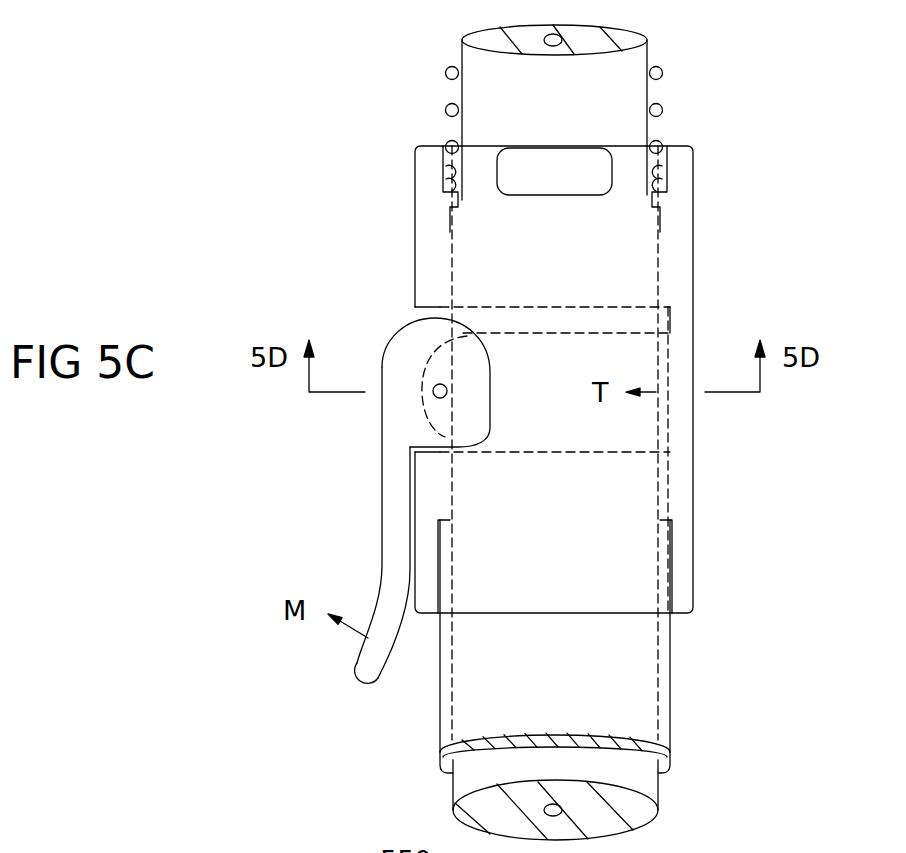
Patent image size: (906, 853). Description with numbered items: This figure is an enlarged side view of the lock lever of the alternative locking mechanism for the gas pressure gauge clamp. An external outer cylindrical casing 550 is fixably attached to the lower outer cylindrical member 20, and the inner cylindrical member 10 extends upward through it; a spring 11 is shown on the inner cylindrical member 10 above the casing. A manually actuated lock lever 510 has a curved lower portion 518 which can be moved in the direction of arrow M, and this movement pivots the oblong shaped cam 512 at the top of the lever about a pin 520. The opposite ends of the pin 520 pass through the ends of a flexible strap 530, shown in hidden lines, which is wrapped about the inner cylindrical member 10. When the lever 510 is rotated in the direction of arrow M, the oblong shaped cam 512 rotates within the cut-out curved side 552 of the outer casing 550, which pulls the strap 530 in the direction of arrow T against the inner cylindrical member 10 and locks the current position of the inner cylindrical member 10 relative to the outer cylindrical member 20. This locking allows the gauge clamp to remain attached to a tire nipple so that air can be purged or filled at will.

The inner cylindrical member 10 is at (647, 43).
The spring 11 is at (445, 110).
The external outer cylindrical casing 550 is at (415, 178).
The cut-out curved side 552 is at (440, 307).
The flexible strap 530 is at (610, 332).
The oblong shaped cam 512 is at (395, 335).
The pin 520 is at (435, 396).
The lock lever 510 is at (380, 497).
The curved lower portion 518 is at (360, 681).
The outer cylindrical member 20 is at (672, 692).